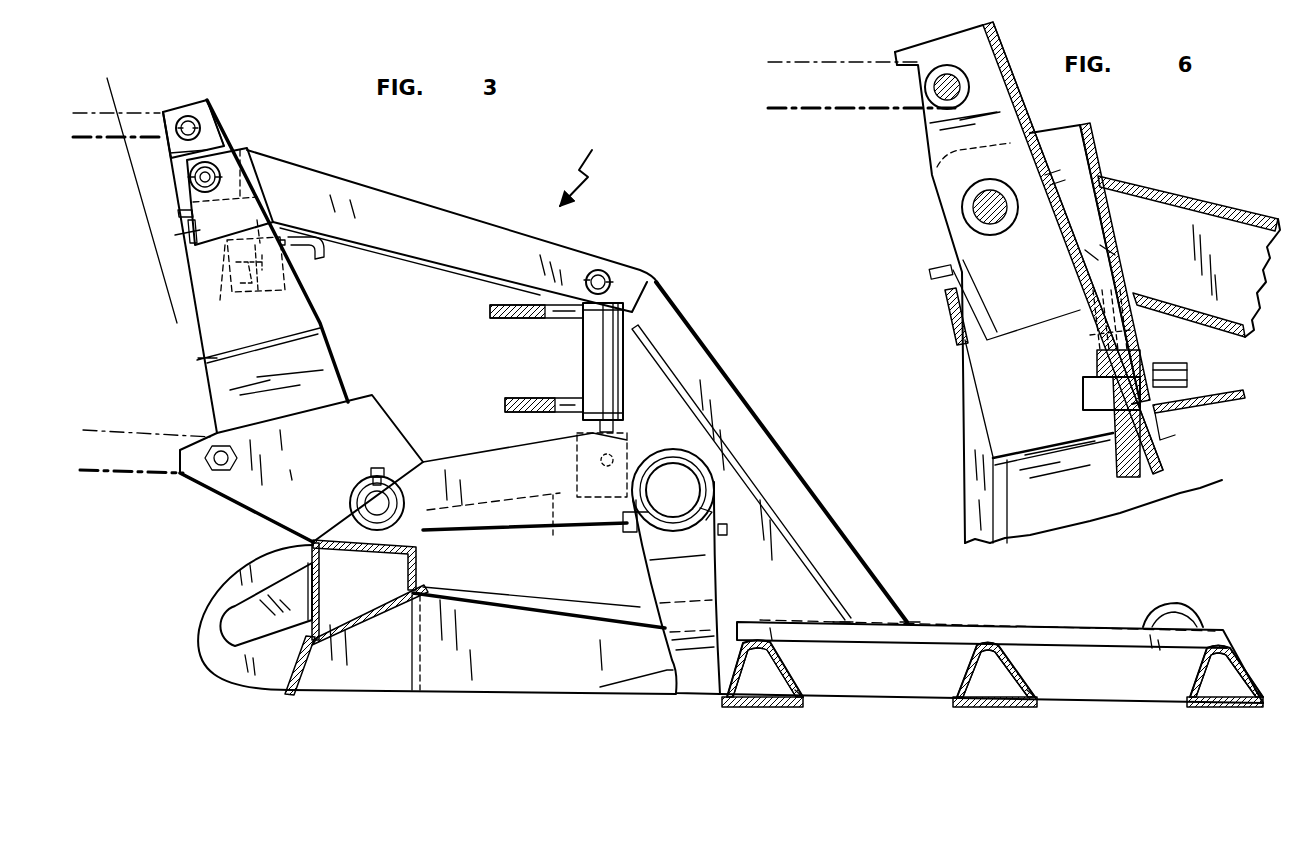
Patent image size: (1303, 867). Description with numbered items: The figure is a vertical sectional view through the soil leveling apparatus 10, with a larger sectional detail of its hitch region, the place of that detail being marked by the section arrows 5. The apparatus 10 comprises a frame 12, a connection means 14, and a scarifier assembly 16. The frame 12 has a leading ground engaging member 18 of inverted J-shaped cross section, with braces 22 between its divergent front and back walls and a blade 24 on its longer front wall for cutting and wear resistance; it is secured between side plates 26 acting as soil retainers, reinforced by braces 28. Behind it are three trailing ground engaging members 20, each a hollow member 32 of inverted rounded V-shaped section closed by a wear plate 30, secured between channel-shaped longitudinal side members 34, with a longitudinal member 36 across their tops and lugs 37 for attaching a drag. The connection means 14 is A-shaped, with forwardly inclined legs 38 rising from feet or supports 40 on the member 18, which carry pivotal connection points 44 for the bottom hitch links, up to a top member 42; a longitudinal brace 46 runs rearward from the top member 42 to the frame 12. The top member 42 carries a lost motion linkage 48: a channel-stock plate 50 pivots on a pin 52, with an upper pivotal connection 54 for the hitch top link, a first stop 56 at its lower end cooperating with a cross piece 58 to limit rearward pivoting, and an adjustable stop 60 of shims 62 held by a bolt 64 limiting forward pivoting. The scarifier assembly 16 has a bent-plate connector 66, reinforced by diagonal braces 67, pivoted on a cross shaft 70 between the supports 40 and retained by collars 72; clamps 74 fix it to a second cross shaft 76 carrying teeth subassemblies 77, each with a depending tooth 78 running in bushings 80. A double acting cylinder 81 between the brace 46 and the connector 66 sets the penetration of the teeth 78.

In FIG. 3, the section line 5 is at (68, 102).
In FIG. 3, the soil leveling apparatus 10 is at (582, 163).
In FIG. 3, the frame 12 is at (523, 697).
In FIG. 3, the connection means 14 is at (252, 202).
In FIG. 6, the connection means 14 is at (1103, 246).
In FIG. 3, the scarifier assembly 16 is at (716, 462).
In FIG. 3, the leading ground engaging member 18 is at (420, 561).
In FIG. 3, the trailing ground engaging members 20 is at (802, 676).
In FIG. 3, the braces 22 is at (365, 623).
In FIG. 3, the blade 24 is at (270, 692).
In FIG. 3, the side plates 26 is at (205, 672).
In FIG. 3, the braces 28 is at (228, 628).
In FIG. 3, the wear plate 30 is at (752, 708).
In FIG. 3, the hollow member 32 is at (805, 686).
In FIG. 3, the longitudinal side members 34 is at (932, 622).
In FIG. 3, the longitudinal member 36 is at (1020, 630).
In FIG. 3, the lugs 37 is at (1150, 612).
In FIG. 3, the legs 38 is at (215, 385).
In FIG. 6, the legs 38 is at (977, 510).
In FIG. 3, the feet or supports 40 is at (243, 493).
In FIG. 3, the top member 42 is at (243, 182).
In FIG. 6, the top member 42 is at (1090, 130).
In FIG. 3, the pivotal connection points 44 is at (217, 462).
In FIG. 3, the longitudinal brace 46 is at (444, 222).
In FIG. 6, the longitudinal brace 46 is at (1190, 197).
In FIG. 3, the lost motion linkage 48 is at (212, 100).
In FIG. 6, the lost motion linkage 48 is at (1004, 34).
In FIG. 3, the plate 50 is at (213, 126).
In FIG. 6, the plate 50 is at (1020, 85).
In FIG. 3, the pin 52 is at (200, 182).
In FIG. 6, the pin 52 is at (973, 208).
In FIG. 3, the pivotal connection 54 is at (187, 117).
In FIG. 6, the pivotal connection 54 is at (945, 92).
In FIG. 3, the first stop 56 is at (180, 214).
In FIG. 6, the first stop 56 is at (930, 273).
In FIG. 3, the cross piece 58 is at (190, 234).
In FIG. 6, the cross piece 58 is at (945, 318).
In FIG. 3, the adjustable stop 60 is at (288, 292).
In FIG. 6, the adjustable stop 60 is at (1106, 452).
In FIG. 3, the shims 62 is at (248, 292).
In FIG. 6, the shims 62 is at (1100, 330).
In FIG. 3, the bolt 64 is at (230, 289).
In FIG. 6, the bolt 64 is at (1085, 402).
In FIG. 3, the connector 66 is at (523, 510).
In FIG. 3, the diagonal braces 67 is at (550, 526).
In FIG. 3, the cross shaft 70 is at (350, 503).
In FIG. 3, the collars 72 is at (368, 478).
In FIG. 3, the clamps 74 is at (632, 528).
In FIG. 3, the second cross shaft 76 is at (670, 462).
In FIG. 3, the teeth subassemblies 77 is at (722, 593).
In FIG. 3, the tooth 78 is at (672, 612).
In FIG. 3, the bushings 80 is at (712, 487).
In FIG. 3, the double acting cylinder 81 is at (583, 362).